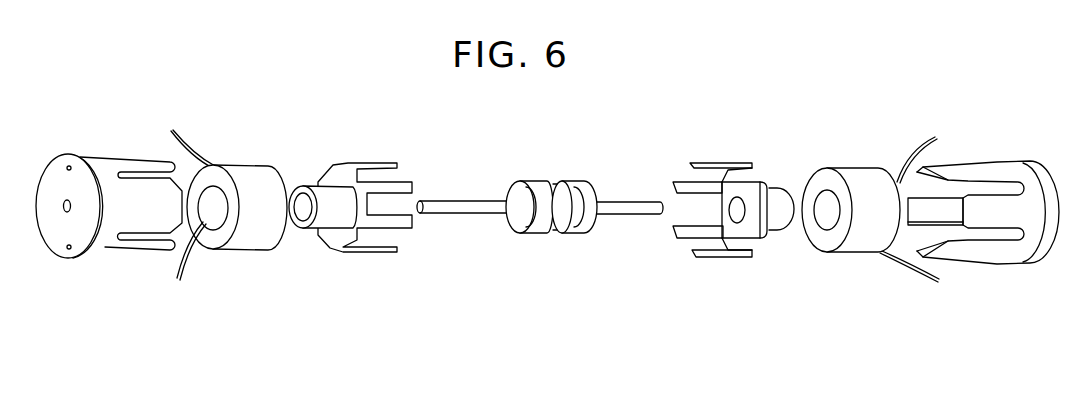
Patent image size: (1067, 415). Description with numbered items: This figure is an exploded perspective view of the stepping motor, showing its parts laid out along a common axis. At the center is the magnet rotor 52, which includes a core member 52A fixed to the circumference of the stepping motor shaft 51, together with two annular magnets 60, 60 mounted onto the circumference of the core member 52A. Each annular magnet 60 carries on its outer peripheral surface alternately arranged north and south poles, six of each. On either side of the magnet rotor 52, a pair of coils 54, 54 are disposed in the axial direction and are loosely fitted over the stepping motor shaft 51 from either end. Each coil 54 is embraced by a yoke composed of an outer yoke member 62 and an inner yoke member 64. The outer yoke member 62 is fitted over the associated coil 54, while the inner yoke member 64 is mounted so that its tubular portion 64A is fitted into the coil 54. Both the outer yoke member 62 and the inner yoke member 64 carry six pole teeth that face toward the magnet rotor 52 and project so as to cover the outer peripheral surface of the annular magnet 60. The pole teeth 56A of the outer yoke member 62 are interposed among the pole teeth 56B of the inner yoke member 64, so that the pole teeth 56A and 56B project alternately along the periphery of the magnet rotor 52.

The stepping motor shaft 51 is at (475, 218).
The magnet rotor 52 is at (565, 197).
The core member 52A is at (560, 242).
The coil 54 is at (252, 240).
The pole teeth of outer yoke member 56A is at (148, 207).
The pole teeth of inner yoke member 56B is at (408, 232).
The annular magnet 60 is at (538, 240).
The outer yoke member 62 is at (105, 243).
The inner yoke member 64 is at (358, 258).
The tubular portion 64A is at (330, 233).